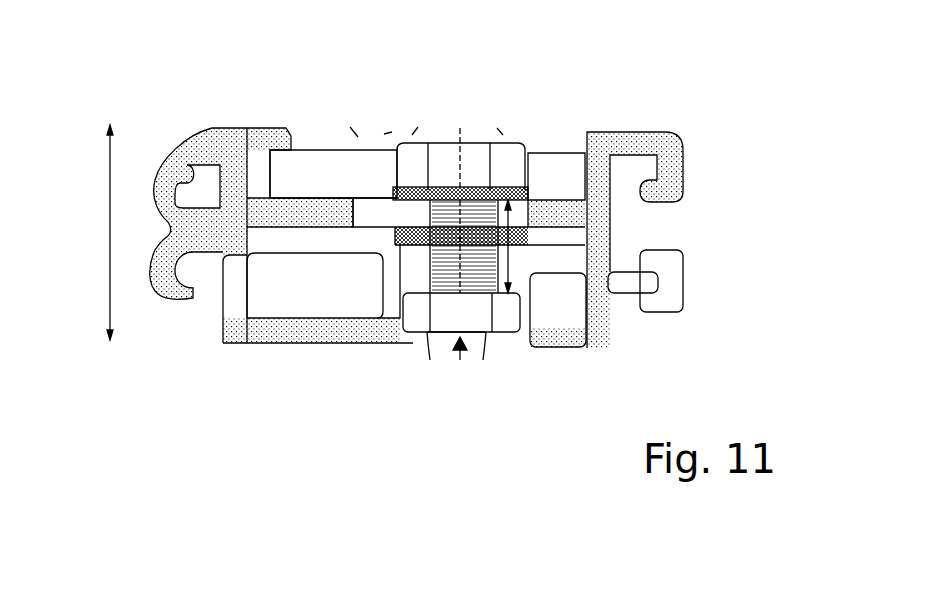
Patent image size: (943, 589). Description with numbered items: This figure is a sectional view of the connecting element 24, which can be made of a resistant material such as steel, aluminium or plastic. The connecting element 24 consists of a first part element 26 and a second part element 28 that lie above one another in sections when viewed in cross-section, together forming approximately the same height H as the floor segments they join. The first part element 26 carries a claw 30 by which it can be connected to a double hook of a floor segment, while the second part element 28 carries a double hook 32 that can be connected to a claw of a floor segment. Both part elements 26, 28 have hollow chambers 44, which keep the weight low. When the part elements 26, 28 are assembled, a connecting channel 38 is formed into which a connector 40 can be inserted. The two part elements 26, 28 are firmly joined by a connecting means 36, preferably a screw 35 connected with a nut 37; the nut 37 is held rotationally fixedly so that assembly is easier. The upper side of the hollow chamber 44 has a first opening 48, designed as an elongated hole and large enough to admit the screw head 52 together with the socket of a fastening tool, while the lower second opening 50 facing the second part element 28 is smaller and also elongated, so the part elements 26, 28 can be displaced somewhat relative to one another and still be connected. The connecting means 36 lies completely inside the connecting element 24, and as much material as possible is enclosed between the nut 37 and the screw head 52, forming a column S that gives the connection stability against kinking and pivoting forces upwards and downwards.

The connecting element 24 is at (740, 187).
The first part element 26 is at (597, 131).
The second part element 28 is at (287, 327).
The claw 30 is at (637, 306).
The double hook 32 is at (203, 125).
The screw 35 is at (482, 333).
The connecting means 36 is at (461, 352).
The nut 37 is at (436, 333).
The connecting channel 38 is at (585, 230).
The connector 40 is at (432, 200).
The hollow chamber 44 is at (342, 178).
The first opening 48 is at (570, 128).
The second opening 50 is at (370, 212).
The screw head 52 is at (475, 160).
The height H is at (110, 228).
The column S is at (525, 271).